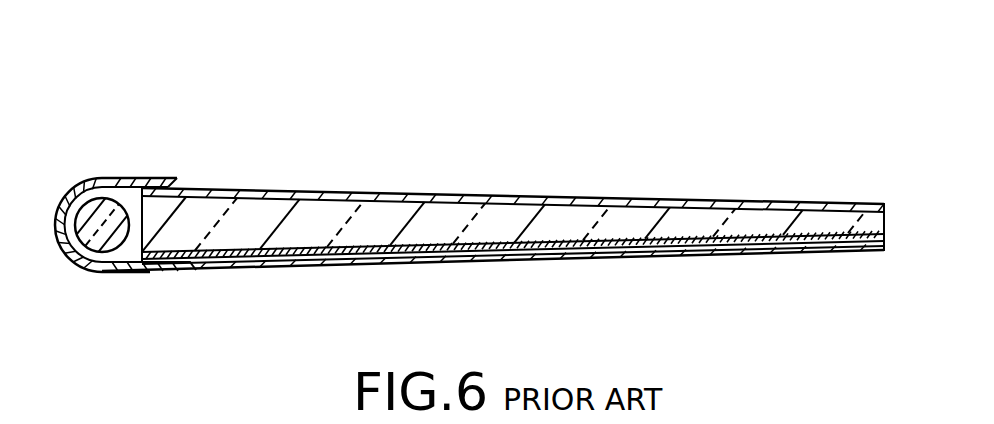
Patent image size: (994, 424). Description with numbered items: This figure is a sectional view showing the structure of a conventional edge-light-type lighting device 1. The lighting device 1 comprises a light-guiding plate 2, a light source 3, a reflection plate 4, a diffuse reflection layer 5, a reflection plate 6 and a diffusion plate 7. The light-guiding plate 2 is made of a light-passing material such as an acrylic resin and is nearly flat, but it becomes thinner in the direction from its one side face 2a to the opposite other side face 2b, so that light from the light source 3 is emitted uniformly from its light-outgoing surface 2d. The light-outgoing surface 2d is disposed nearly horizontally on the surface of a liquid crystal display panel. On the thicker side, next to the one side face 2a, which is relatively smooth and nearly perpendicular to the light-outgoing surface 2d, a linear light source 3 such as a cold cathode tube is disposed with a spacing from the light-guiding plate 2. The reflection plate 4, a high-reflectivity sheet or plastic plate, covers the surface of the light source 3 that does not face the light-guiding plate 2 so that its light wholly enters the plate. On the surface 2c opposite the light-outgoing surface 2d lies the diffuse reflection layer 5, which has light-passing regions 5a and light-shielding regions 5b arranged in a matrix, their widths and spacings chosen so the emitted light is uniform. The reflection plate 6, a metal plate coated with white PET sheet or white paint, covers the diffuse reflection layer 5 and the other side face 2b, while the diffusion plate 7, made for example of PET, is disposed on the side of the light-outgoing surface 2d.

The lighting device 1 is at (783, 87).
The light-guiding plate 2 is at (568, 223).
The one side face 2a is at (121, 180).
The other side face 2b is at (881, 207).
The surface opposite to the light-outgoing surface 2c is at (450, 256).
The light-outgoing surface 2d is at (381, 195).
The light source 3 is at (92, 222).
The reflection plate 4 is at (122, 265).
The diffuse reflection layer 5 is at (300, 258).
The light-passing regions 5a is at (673, 242).
The light-shielding regions 5b is at (617, 250).
The reflection plate 6 is at (850, 245).
The diffusion plate 7 is at (713, 203).